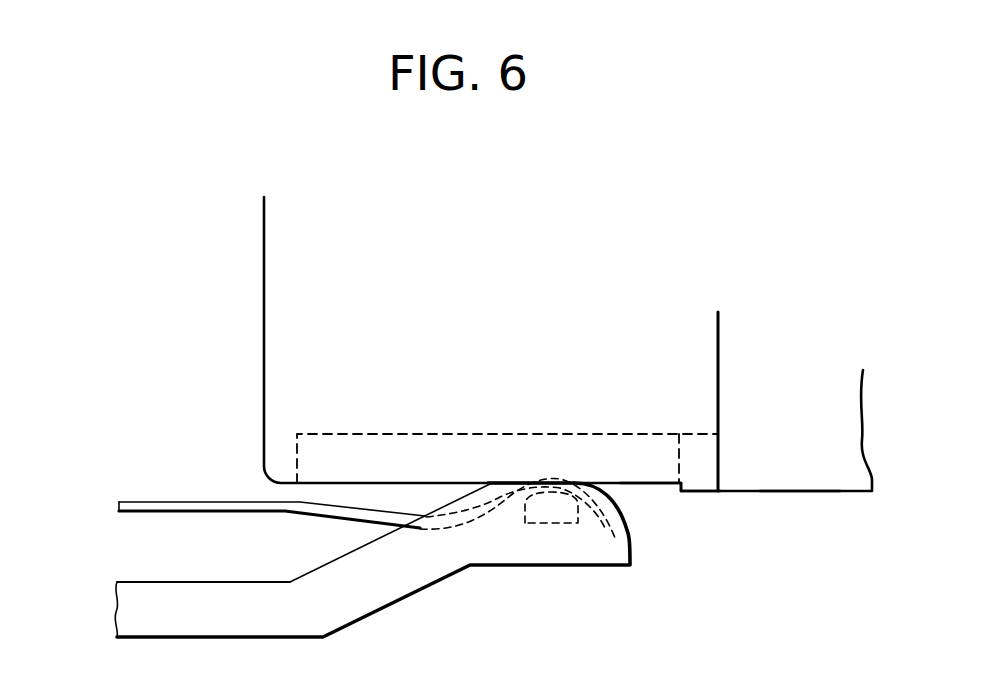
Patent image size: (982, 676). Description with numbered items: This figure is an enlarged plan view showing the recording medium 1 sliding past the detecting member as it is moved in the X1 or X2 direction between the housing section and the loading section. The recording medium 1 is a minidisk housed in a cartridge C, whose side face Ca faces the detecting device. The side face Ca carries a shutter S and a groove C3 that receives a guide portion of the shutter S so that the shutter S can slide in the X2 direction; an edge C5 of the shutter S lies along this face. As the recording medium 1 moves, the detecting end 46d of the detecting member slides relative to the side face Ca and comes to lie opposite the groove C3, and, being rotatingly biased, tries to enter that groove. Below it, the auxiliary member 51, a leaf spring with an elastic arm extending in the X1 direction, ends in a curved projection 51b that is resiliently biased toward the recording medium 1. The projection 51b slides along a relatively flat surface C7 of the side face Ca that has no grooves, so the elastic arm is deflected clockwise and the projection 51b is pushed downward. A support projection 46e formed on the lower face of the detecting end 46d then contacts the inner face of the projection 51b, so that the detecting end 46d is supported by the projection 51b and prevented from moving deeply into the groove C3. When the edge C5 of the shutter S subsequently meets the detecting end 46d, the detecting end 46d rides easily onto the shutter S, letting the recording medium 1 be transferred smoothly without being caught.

The recording medium 1 is at (832, 500).
The cartridge C is at (278, 384).
The groove C3 is at (297, 440).
The edge of the shutter C5 is at (673, 492).
The flat surface C7 is at (651, 486).
The side face Ca is at (798, 497).
The shutter S is at (738, 387).
The auxiliary member 51 is at (137, 504).
The projection 51b is at (516, 494).
The detecting end 46d is at (545, 478).
The support projection 46e is at (553, 523).
The X1 direction X1 is at (92, 335).
The X2 direction X2 is at (140, 335).